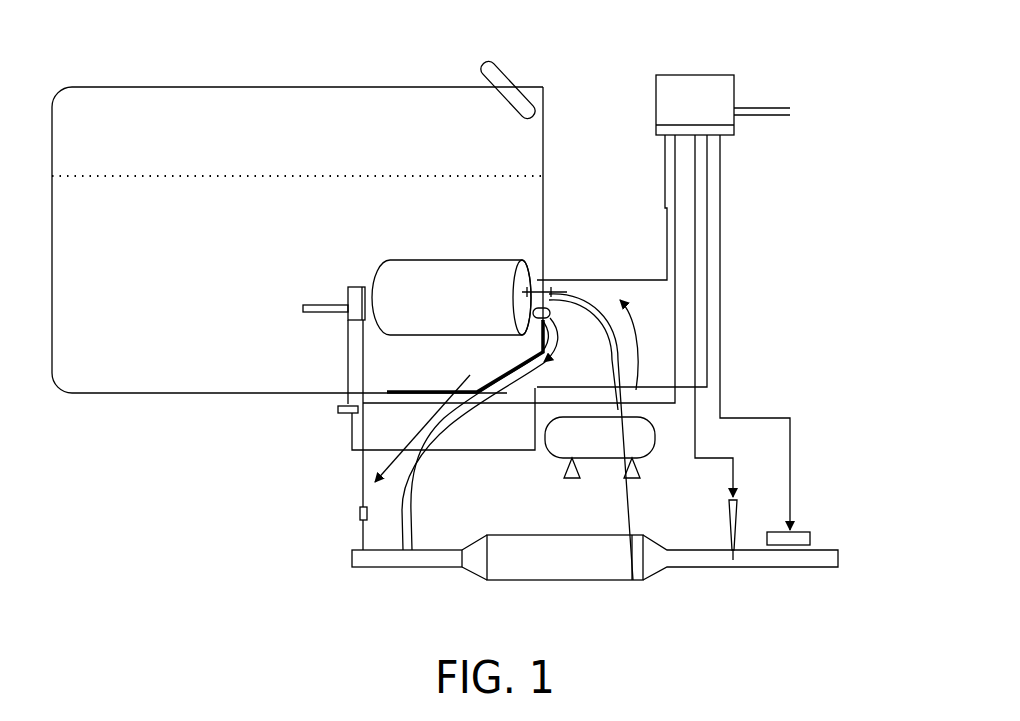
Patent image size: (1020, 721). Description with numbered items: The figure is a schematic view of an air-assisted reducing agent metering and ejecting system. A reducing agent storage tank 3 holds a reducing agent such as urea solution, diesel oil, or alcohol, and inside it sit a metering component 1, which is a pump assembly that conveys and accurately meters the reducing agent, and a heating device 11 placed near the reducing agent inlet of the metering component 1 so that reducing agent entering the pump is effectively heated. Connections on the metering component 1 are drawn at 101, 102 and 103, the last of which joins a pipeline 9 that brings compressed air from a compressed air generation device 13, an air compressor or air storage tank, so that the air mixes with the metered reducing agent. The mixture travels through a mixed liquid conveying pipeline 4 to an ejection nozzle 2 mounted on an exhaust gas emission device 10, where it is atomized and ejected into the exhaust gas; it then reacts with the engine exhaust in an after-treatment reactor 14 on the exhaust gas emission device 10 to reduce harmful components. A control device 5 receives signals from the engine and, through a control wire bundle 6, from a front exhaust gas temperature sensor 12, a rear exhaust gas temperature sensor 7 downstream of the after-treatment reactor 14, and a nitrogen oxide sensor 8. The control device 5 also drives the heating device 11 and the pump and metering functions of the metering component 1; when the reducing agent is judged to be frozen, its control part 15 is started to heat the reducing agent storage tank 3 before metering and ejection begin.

The metering component 1 is at (470, 260).
The ejection nozzle 2 is at (415, 535).
The reducing agent storage tank 3 is at (213, 87).
The mixed liquid conveying pipeline 4 is at (375, 482).
The control device 5 is at (738, 103).
The control wire bundle 6 is at (672, 185).
The rear exhaust gas temperature sensor 7 is at (728, 538).
The nitrogen oxide sensor 8 is at (803, 553).
The pipeline 9 is at (633, 580).
The exhaust gas emission device 10 is at (382, 560).
The heating device 11 is at (356, 353).
The front exhaust gas temperature sensor 12 is at (358, 522).
The compressed air generation device 13 is at (585, 440).
The after-treatment reactor 14 is at (578, 552).
The control part 15 is at (340, 414).
The pump connector 101 is at (533, 282).
The pump inlet 102 is at (368, 290).
The pump outlet 103 is at (557, 288).